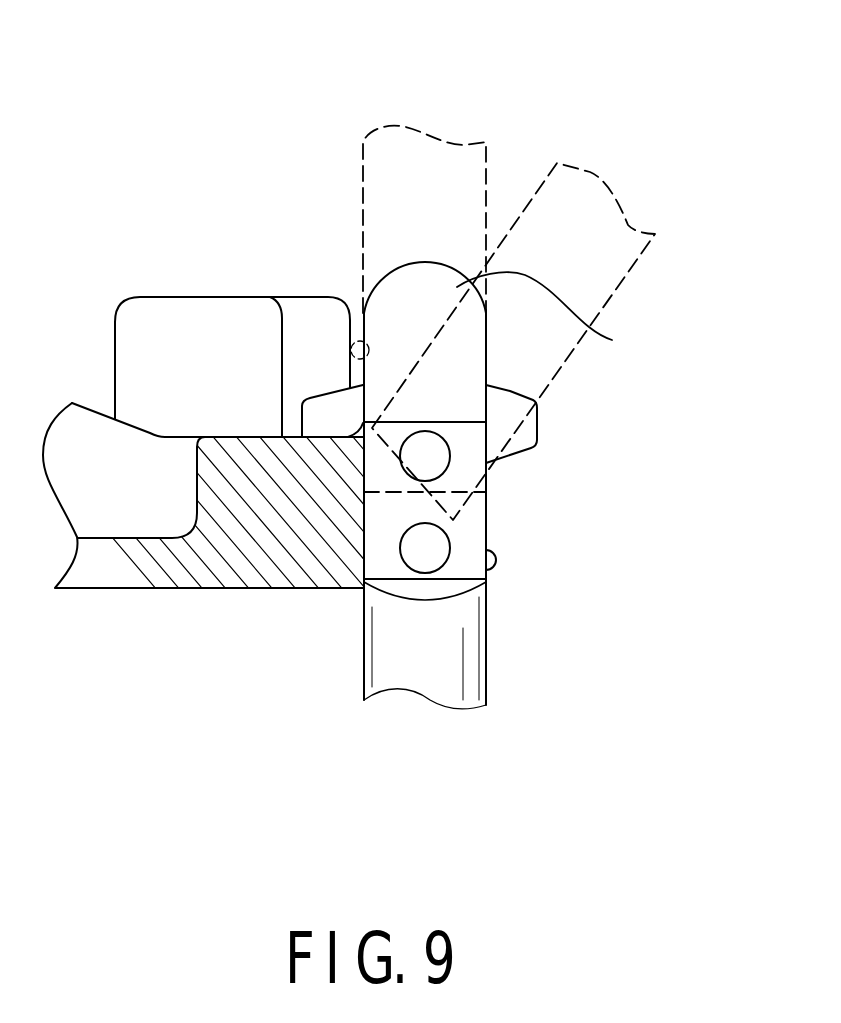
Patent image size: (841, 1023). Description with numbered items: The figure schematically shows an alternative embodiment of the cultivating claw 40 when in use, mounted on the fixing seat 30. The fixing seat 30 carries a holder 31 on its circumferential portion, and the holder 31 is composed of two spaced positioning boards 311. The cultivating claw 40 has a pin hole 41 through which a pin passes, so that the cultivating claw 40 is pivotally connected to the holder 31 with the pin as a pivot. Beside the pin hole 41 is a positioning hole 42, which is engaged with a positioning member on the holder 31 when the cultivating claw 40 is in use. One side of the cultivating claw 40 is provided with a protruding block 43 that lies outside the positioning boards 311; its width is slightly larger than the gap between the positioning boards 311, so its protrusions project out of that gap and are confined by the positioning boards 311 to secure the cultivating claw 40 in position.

The fixing seat 30 is at (112, 608).
The holder 31 is at (425, 260).
The positioning board 311 is at (612, 340).
The cultivating claw 40 is at (340, 637).
The pin hole 41 is at (437, 458).
The positioning hole 42 is at (432, 548).
The protruding block 43 is at (497, 563).